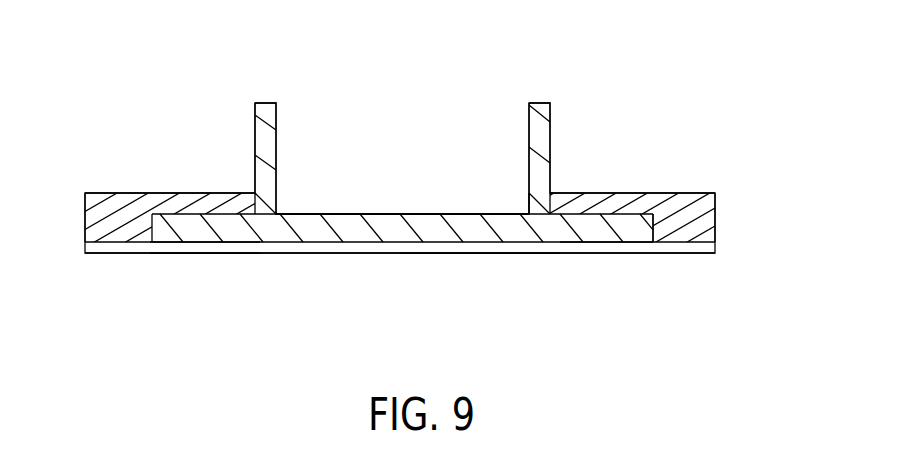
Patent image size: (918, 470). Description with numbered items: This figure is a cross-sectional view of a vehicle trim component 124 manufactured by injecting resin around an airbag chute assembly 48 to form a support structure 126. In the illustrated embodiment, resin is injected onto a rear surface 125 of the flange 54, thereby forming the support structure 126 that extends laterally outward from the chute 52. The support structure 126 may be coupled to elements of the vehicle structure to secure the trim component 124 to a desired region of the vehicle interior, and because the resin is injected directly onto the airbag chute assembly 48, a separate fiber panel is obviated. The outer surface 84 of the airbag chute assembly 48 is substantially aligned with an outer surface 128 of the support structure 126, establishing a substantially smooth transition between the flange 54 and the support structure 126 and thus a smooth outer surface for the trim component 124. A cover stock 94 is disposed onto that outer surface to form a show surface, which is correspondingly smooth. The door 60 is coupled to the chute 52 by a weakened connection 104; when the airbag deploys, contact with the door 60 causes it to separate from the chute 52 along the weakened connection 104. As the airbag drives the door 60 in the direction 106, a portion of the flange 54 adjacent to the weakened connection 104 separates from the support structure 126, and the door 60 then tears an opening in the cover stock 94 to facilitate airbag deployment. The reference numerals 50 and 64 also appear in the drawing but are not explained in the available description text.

The trim assembly 50 is at (382, 124).
The chute 52 is at (541, 102).
The airbag chute assembly 48 is at (442, 160).
The vehicle trim component 124 is at (747, 158).
The support structure 126 is at (133, 200).
The rear surface 125 is at (173, 212).
The door 60 is at (341, 213).
The weakened connection 104 is at (538, 204).
The cover stock 94 is at (97, 255).
The outer surface 84 is at (203, 243).
The flange 54 is at (597, 232).
The end edge 64 is at (653, 217).
The outer surface 128 is at (685, 250).
The direction 106 is at (490, 273).